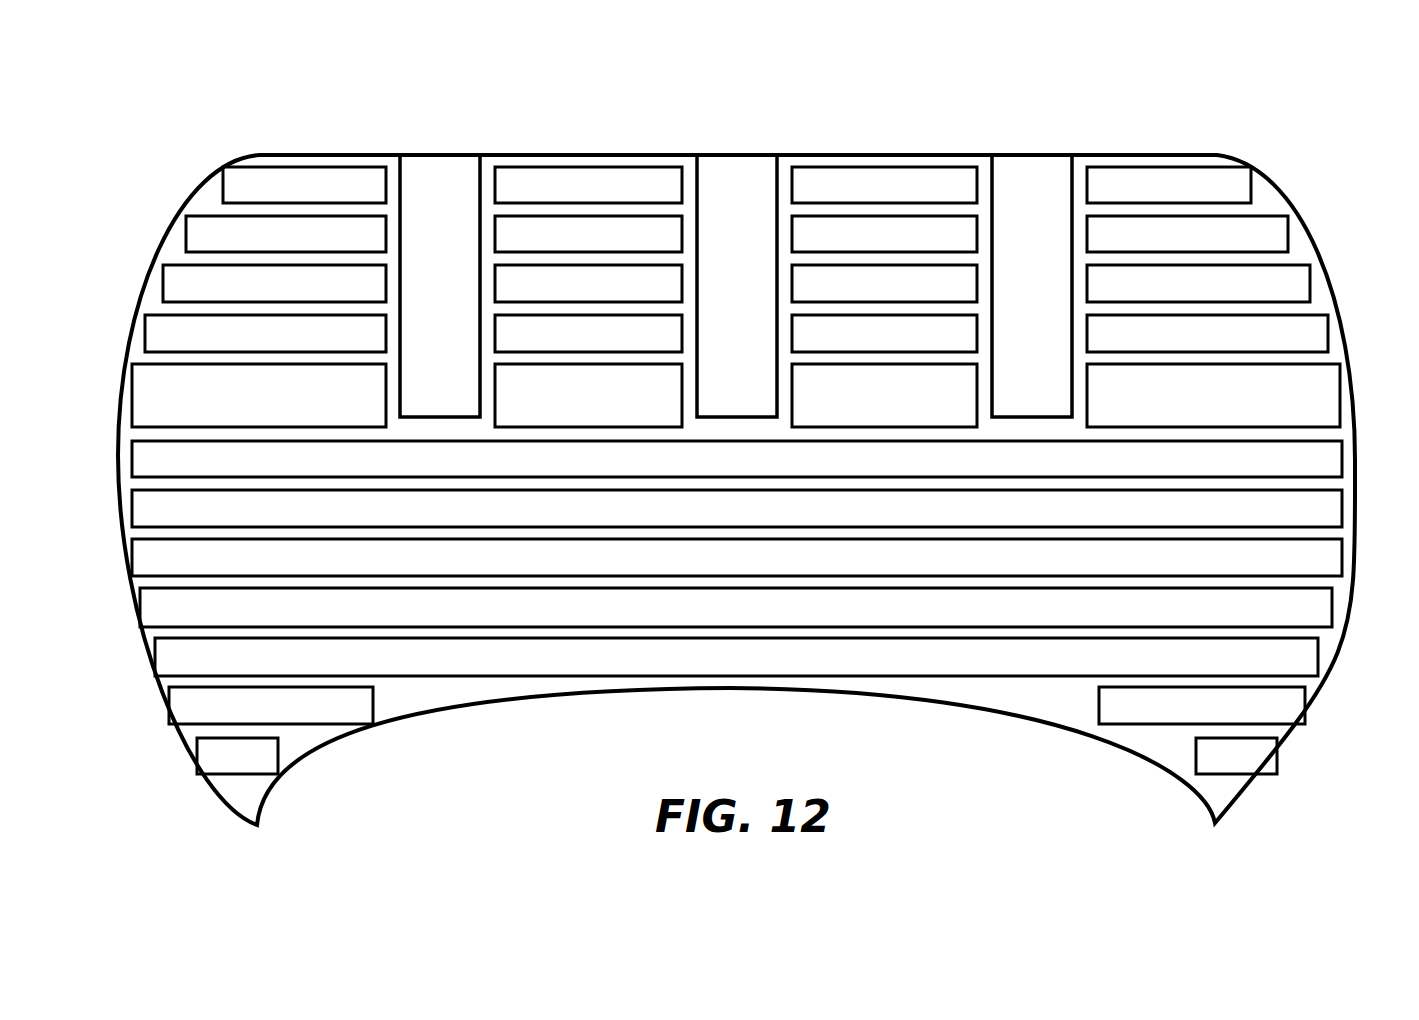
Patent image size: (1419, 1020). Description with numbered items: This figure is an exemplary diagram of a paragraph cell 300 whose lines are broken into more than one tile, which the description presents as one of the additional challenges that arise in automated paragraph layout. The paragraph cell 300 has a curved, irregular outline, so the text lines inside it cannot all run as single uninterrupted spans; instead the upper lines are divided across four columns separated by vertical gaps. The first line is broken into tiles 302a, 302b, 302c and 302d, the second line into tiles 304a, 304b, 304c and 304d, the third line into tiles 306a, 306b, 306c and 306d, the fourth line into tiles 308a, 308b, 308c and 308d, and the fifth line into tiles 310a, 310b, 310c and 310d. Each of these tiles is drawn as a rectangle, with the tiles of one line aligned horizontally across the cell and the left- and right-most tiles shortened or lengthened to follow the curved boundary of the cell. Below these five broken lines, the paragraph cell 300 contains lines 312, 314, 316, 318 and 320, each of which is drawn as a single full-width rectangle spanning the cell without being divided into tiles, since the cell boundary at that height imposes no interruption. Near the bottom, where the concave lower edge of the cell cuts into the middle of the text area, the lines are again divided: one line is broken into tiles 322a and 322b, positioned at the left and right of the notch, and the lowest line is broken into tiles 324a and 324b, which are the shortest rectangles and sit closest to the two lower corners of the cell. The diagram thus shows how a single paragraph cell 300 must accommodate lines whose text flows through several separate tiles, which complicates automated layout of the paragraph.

The paragraph cell 300 is at (373, 88).
The tile 302a is at (387, 185).
The tile 302b is at (683, 185).
The tile 302c is at (978, 185).
The tile 302d is at (1252, 182).
The tile 304a is at (387, 234).
The tile 304b is at (683, 234).
The tile 304c is at (978, 234).
The tile 304d is at (1289, 230).
The tile 306a is at (387, 283).
The tile 306b is at (683, 283).
The tile 306c is at (978, 283).
The tile 306d is at (1311, 280).
The tile 308a is at (387, 333).
The tile 308b is at (683, 333).
The tile 308c is at (978, 333).
The tile 308d is at (1329, 331).
The tile 310a is at (387, 398).
The tile 310b is at (683, 398).
The tile 310c is at (978, 398).
The tile 310d is at (1341, 396).
The line 312 is at (1350, 445).
The line 314 is at (1343, 507).
The line 316 is at (1343, 555).
The line 318 is at (1333, 605).
The line 320 is at (1319, 655).
The tile 322a is at (374, 705).
The tile 322b is at (1306, 705).
The tile 324a is at (279, 755).
The tile 324b is at (1278, 755).